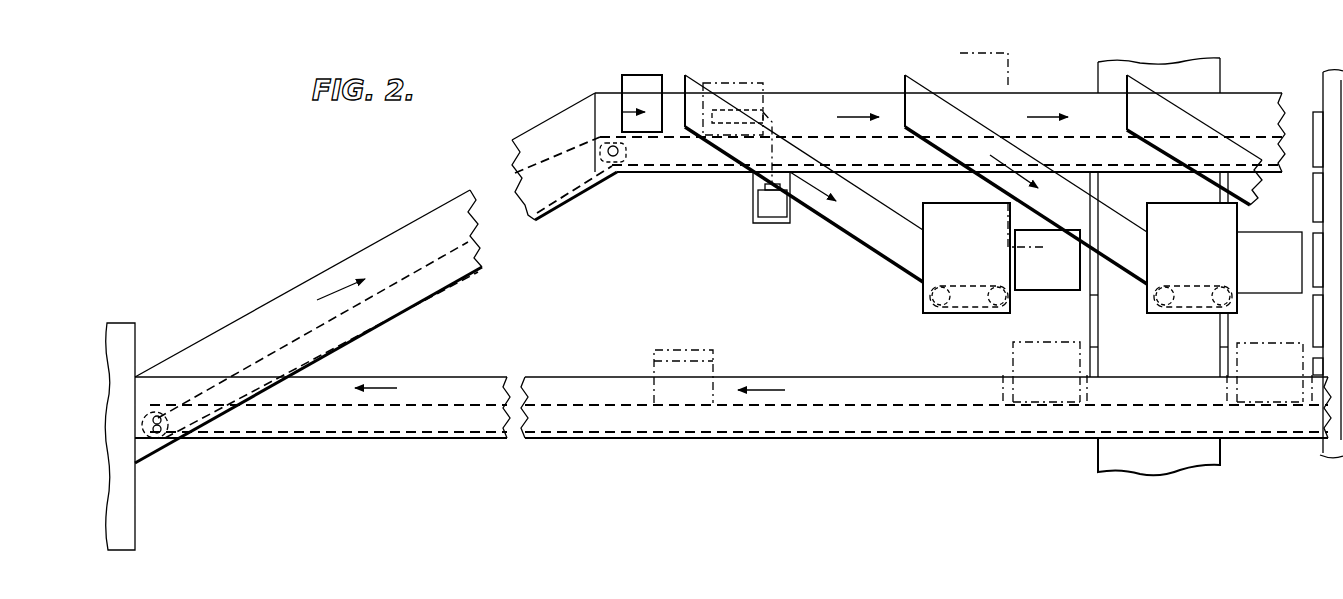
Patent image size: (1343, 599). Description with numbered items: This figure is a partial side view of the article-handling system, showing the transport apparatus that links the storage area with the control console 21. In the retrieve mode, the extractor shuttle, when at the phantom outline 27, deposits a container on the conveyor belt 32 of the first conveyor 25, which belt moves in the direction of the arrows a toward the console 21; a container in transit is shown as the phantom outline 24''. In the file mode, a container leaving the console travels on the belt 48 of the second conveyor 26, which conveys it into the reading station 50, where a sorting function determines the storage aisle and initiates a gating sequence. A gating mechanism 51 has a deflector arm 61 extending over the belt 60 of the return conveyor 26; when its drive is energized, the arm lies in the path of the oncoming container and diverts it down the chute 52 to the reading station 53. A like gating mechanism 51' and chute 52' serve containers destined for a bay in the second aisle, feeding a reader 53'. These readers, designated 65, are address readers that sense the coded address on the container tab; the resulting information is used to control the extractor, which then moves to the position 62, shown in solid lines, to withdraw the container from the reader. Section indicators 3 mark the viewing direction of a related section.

The section line 3-3 indicator 3 is at (199, 43).
The control console 21 is at (131, 321).
The second conveyor 26 is at (367, 239).
The belt 48 is at (417, 263).
The conveyor belt 32 is at (334, 435).
The first conveyor 25 is at (792, 442).
The container 24'' is at (683, 355).
The phantom outline 27 is at (1013, 358).
The extractor position 62 is at (1058, 291).
The reading station 50 is at (639, 88).
The belt 60 is at (680, 167).
The deflector arm 61 is at (727, 83).
The gating mechanism 51 is at (730, 90).
The gating mechanism 51' is at (927, 86).
The chute 52 is at (804, 178).
The chute 52' is at (1026, 179).
The reading station 53 is at (952, 247).
The reader 53' is at (1192, 245).
The address reader 65 is at (978, 257).